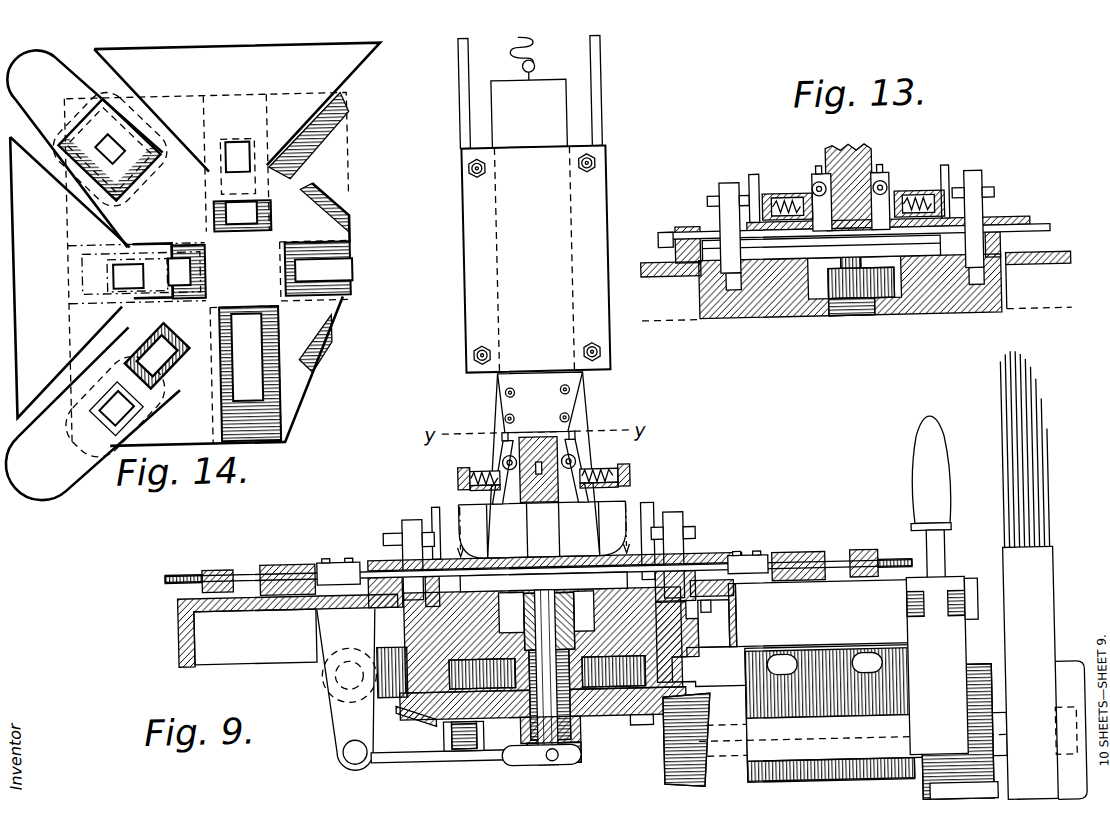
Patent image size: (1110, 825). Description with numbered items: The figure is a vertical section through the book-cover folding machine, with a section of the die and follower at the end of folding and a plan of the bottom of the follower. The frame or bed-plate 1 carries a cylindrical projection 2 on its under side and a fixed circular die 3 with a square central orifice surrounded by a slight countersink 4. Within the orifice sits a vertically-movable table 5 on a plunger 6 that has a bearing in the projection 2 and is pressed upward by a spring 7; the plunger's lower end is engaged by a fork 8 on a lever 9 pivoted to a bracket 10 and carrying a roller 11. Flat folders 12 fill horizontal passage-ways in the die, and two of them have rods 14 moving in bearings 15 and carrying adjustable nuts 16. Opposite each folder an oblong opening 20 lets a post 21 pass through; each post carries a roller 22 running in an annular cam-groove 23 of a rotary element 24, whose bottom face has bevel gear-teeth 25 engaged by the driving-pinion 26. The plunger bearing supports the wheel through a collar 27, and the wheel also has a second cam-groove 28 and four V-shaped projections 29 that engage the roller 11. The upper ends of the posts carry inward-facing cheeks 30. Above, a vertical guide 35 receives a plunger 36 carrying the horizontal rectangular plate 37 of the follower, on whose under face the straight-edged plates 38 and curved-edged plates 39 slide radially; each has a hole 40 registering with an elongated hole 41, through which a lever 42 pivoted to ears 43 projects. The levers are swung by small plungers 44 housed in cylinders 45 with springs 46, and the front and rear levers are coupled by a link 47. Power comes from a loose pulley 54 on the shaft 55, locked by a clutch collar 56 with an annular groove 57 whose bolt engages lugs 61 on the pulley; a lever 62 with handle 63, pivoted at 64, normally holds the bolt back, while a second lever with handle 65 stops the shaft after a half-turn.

In FIG. 13, the frame or bed-plate 1 is at (1030, 268).
In FIG. 9, the frame or bed-plate 1 is at (545, 622).
In FIG. 13, the cylindrical projection 2 is at (790, 315).
In FIG. 9, the cylindrical projection 2 is at (642, 690).
In FIG. 13, the circular die 3 is at (1000, 220).
In FIG. 9, the circular die 3 is at (710, 557).
In FIG. 9, the countersink 4 is at (588, 534).
In FIG. 9, the vertically-movable table 5 is at (522, 530).
In FIG. 13, the plunger 6 is at (840, 268).
In FIG. 9, the plunger 6 is at (554, 586).
In FIG. 9, the spring 7 is at (575, 670).
In FIG. 9, the fork 8 is at (520, 765).
In FIG. 9, the lever 9 is at (450, 760).
In FIG. 9, the bracket 10 is at (348, 690).
In FIG. 9, the roller 11 is at (462, 748).
In FIG. 13, the flat plate or folder 12 is at (990, 226).
In FIG. 9, the flat plate or folder 12 is at (738, 566).
In FIG. 9, the outwardly-extending rods 14 is at (186, 567).
In FIG. 9, the bearings 15 is at (280, 559).
In FIG. 9, the adjustable nut 16 is at (216, 563).
In FIG. 13, the oblong opening 20 is at (702, 237).
In FIG. 9, the oblong opening 20 is at (332, 558).
In FIG. 13, the post 21 is at (728, 180).
In FIG. 9, the post 21 is at (410, 517).
In FIG. 9, the roller 22 is at (696, 633).
In FIG. 9, the annular cam-groove 23 is at (714, 611).
In FIG. 9, the wheel or rotary element 24 is at (690, 656).
In FIG. 9, the bevel gear-teeth 25 is at (406, 716).
In FIG. 9, the driving-pinion 26 is at (680, 785).
In FIG. 9, the collar 27 is at (580, 732).
In FIG. 9, the annular cam-groove 28 is at (690, 672).
In FIG. 9, the V-shaped projections 29 is at (638, 727).
In FIG. 13, the cheeks 30 is at (856, 178).
In FIG. 9, the cheeks 30 is at (437, 505).
In FIG. 9, the vertical guide 35 is at (600, 305).
In FIG. 9, the plunger 36 is at (530, 92).
In FIG. 14, the horizontal rectangular plate 37 is at (305, 319).
In FIG. 14, the plates 38 is at (198, 230).
In FIG. 9, the plates 38 is at (562, 472).
In FIG. 14, the plates 39 is at (91, 274).
In FIG. 14, the hole 40 is at (108, 162).
In FIG. 14, the elongated hole 41 is at (245, 330).
In FIG. 13, the lever 42 is at (820, 173).
In FIG. 9, the lever 42 is at (509, 470).
In FIG. 13, the ears 43 is at (890, 182).
In FIG. 9, the ears 43 is at (585, 462).
In FIG. 13, the small horizontal plungers 44 is at (918, 196).
In FIG. 9, the small horizontal plungers 44 is at (632, 472).
In FIG. 9, the small cylinders 45 is at (465, 466).
In FIG. 13, the springs 46 is at (795, 192).
In FIG. 9, the springs 46 is at (488, 470).
In FIG. 13, the link 47 is at (868, 165).
In FIG. 9, the link 47 is at (539, 428).
In FIG. 9, the loose pulley 54 is at (1028, 574).
In FIG. 9, the shaft 55 is at (822, 772).
In FIG. 9, the collar 56 is at (970, 680).
In FIG. 9, the annular groove 57 is at (964, 792).
In FIG. 9, the lugs 61 is at (1052, 738).
In FIG. 9, the lever 62 is at (945, 676).
In FIG. 9, the handle 63 is at (946, 495).
In FIG. 9, the pivot 64 is at (958, 586).
In FIG. 9, the handle 65 is at (546, 62).